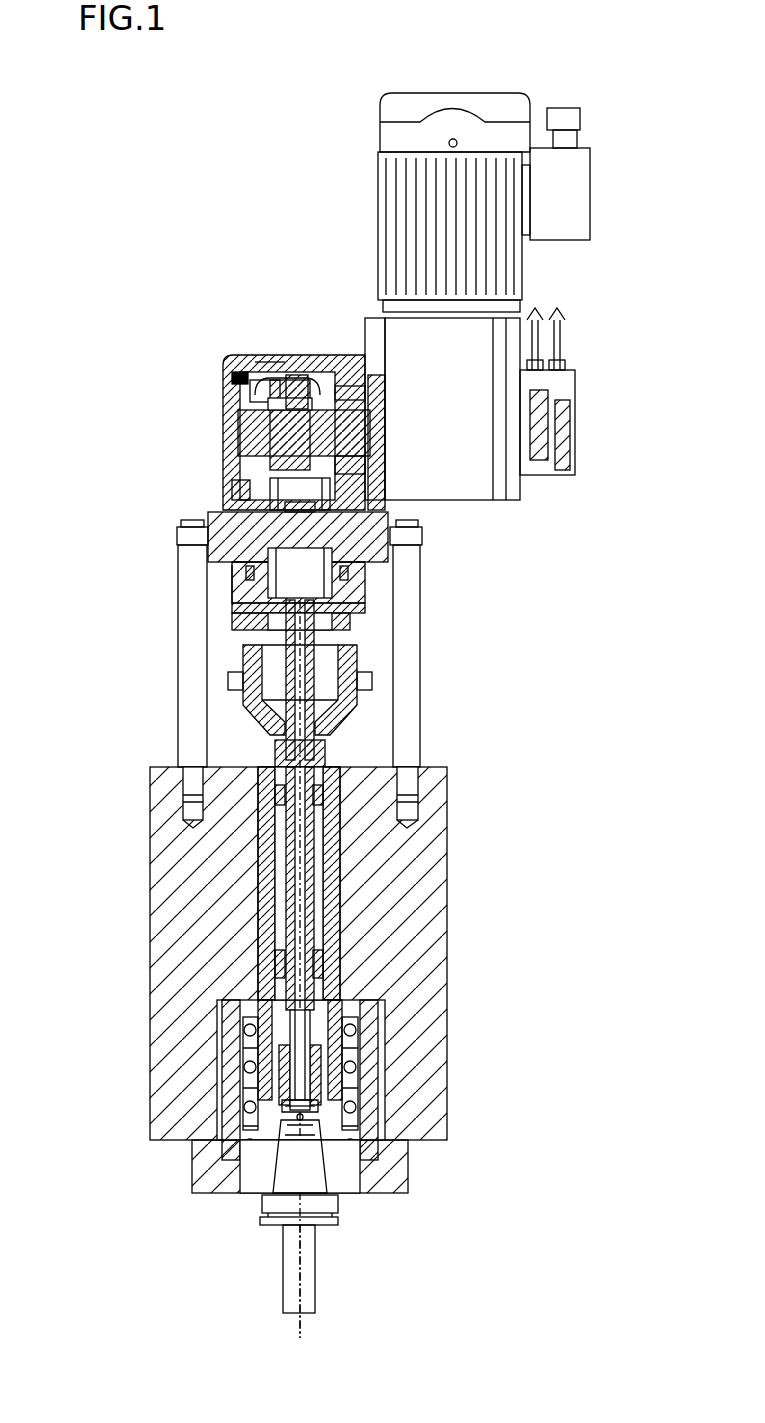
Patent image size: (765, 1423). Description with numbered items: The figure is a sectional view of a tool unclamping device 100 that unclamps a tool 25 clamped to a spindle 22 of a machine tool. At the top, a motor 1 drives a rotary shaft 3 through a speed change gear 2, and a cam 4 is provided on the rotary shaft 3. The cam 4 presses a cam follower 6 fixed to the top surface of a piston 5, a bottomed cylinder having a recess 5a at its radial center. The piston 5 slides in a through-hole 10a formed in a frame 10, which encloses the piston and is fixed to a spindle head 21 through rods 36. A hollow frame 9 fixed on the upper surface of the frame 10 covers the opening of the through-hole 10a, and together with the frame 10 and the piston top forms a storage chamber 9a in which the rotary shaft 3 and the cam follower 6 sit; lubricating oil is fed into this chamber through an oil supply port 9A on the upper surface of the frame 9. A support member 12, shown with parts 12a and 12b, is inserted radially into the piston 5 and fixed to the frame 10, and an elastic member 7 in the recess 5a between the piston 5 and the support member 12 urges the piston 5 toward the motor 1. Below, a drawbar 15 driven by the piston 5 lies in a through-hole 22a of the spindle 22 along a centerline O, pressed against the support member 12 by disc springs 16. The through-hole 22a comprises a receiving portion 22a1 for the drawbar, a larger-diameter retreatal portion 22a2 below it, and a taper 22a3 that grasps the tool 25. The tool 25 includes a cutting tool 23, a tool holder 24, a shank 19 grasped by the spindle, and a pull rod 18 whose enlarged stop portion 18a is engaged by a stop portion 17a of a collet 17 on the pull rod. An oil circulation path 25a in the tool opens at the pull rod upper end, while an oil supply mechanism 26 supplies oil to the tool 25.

The tool unclamping device 100 is at (259, 102).
The motor 1 is at (505, 268).
The speed change gear 2 is at (497, 488).
The rotary shaft 3 is at (250, 445).
The cam 4 is at (298, 378).
The piston 5 is at (265, 522).
The recess 5a is at (258, 598).
The cam follower 6 is at (265, 492).
The elastic member 7 is at (335, 570).
The hollow frame 9 is at (235, 415).
The storage chamber 9a is at (255, 388).
The oil supply port 9A is at (283, 358).
The frame 10 is at (378, 550).
The through-hole 10a is at (250, 565).
The support member 12 is at (382, 633).
The upper plate 12a is at (350, 610).
The lower plate 12b is at (330, 625).
The drawbar 15 is at (318, 744).
The disc springs 16 is at (303, 925).
The collet 17 is at (322, 1062).
The stop portion 17a is at (302, 1112).
The pull rod 18 is at (306, 1125).
The stop portion 18a is at (320, 1100).
The shank 19 is at (326, 1178).
The spindle head 21 is at (437, 812).
The spindle 22 is at (338, 870).
The through-hole 22a is at (197, 1038).
The receiving portion 22a1 is at (275, 917).
The retreatal portion 22a2 is at (278, 1095).
The taper 22a3 is at (285, 1140).
The tool 23 is at (320, 1243).
The tool holder 24 is at (333, 1203).
The tool 25 is at (394, 1161).
The oil circulation path 25a is at (312, 1098).
The oil supply mechanism 26 is at (280, 638).
The rods 36 is at (405, 693).
The centerline O is at (295, 1248).